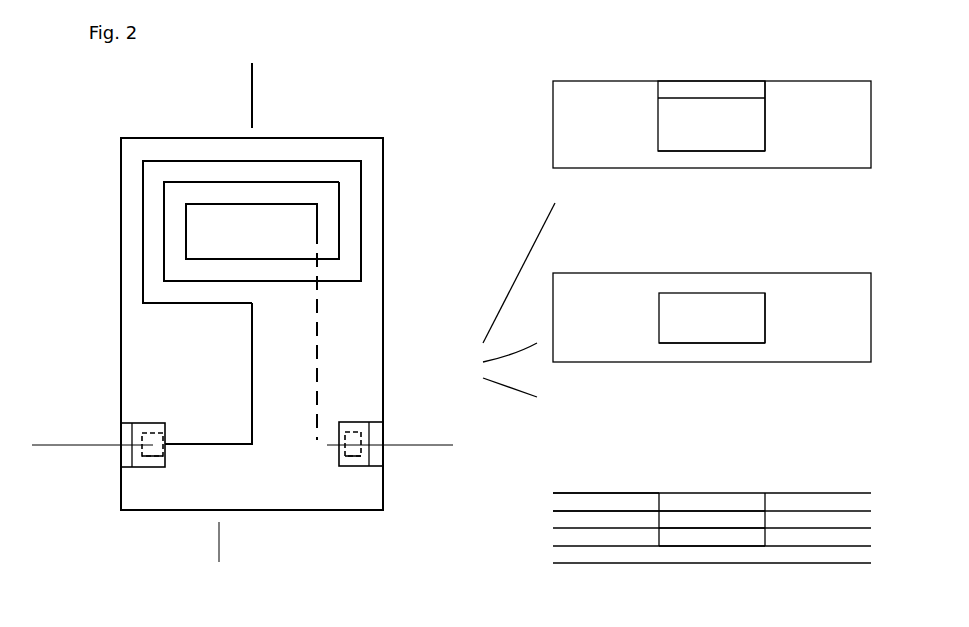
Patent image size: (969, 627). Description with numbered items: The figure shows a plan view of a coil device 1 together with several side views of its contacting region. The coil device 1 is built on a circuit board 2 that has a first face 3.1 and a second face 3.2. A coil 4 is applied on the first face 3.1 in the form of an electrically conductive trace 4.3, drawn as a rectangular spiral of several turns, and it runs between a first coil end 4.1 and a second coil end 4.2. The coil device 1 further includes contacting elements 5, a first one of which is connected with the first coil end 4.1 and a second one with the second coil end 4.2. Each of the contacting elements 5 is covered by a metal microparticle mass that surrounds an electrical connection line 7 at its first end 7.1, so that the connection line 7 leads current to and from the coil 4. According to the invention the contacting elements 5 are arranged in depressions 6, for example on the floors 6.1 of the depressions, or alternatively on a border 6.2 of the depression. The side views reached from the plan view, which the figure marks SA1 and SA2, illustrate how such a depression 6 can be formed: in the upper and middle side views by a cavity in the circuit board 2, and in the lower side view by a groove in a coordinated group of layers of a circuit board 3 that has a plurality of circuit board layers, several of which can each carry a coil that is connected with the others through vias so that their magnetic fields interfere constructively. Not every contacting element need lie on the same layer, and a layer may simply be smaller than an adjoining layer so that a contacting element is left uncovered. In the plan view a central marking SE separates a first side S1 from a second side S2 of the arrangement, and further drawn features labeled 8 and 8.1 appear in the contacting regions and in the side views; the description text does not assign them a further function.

The coil device 1 is at (413, 98).
The circuit board 2 is at (372, 302).
The circuit board 3 is at (342, 500).
The first face 3.1 is at (133, 502).
The second face 3.2 is at (563, 511).
The coil 4 is at (187, 150).
The first coil end 4.1 is at (159, 262).
The second coil end 4.2 is at (318, 225).
The electrically conductive trace 4.3 is at (307, 160).
The contacting elements 5 is at (153, 443).
The depressions 6 is at (143, 455).
The floors of the depressions 6.1 is at (378, 430).
The border of the depression 6.2 is at (360, 467).
The electrical connection line 7 is at (241, 445).
The first end 7.1 is at (150, 457).
The conductor track 8 is at (137, 427).
The conductor track end 8.1 is at (250, 332).
The symmetry axis SE is at (250, 76).
The first side S1 is at (228, 93).
The second side S2 is at (280, 93).
The first section view SA1 is at (385, 422).
The second section view SA2 is at (220, 557).